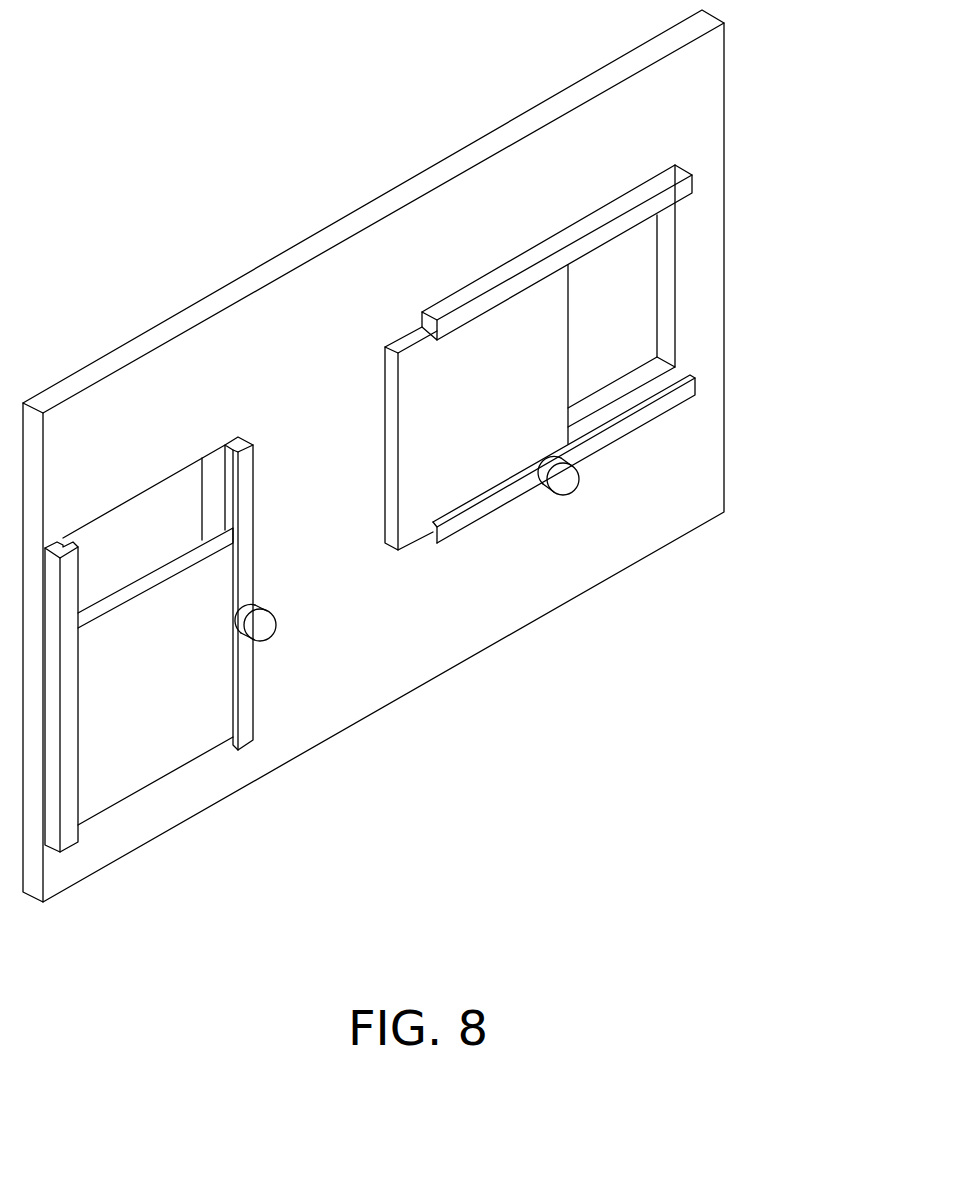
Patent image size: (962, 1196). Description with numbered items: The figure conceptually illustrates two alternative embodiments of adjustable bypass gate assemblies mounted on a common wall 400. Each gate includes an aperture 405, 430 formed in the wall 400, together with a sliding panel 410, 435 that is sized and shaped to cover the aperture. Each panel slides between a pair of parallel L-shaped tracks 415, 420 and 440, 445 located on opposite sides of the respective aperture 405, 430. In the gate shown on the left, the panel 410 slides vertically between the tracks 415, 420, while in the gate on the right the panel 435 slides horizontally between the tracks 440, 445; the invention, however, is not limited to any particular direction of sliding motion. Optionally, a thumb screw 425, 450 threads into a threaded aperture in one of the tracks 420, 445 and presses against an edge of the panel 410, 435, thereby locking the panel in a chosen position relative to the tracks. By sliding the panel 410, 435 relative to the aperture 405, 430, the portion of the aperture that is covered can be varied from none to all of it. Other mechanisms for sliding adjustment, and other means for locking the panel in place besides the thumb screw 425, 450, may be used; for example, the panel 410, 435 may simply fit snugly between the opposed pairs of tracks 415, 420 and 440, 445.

The wall 400 is at (392, 620).
The aperture 405 is at (147, 520).
The sliding panel 410 is at (132, 723).
The L-shaped track 415 is at (67, 817).
The L-shaped track 420 is at (249, 714).
The thumb screw 425 is at (262, 627).
The aperture 430 is at (618, 297).
The sliding panel 435 is at (412, 457).
The L-shaped track 440 is at (467, 312).
The L-shaped track 445 is at (644, 420).
The thumb screw 450 is at (567, 480).